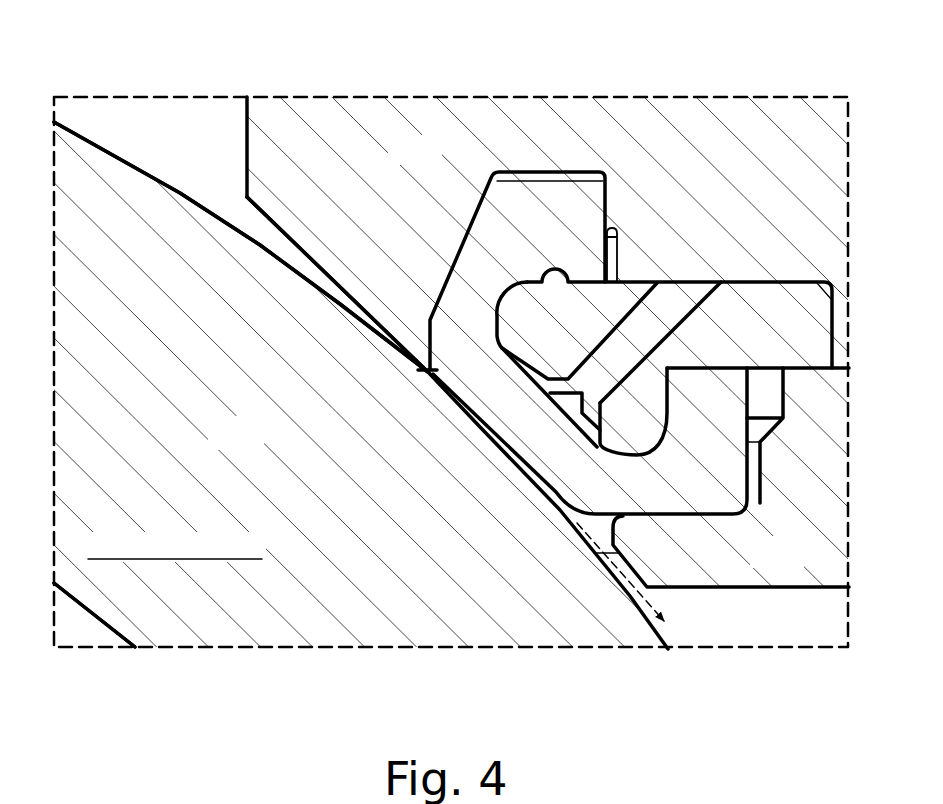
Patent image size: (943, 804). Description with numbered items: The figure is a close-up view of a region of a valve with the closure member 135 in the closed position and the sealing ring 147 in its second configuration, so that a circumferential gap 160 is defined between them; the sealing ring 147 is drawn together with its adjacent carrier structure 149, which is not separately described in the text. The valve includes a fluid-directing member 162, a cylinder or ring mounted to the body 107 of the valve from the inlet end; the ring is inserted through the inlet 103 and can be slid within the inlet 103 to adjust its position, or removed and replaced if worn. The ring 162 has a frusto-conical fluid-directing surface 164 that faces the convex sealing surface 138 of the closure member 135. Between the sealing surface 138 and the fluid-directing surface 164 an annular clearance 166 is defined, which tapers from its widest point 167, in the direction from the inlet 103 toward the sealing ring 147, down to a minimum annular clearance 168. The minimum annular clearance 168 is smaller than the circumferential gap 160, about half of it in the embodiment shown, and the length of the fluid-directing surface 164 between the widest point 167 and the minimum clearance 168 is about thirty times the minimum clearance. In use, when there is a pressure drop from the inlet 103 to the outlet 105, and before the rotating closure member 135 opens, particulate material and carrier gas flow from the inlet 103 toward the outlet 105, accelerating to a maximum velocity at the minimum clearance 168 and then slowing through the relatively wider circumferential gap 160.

The inlet 103 is at (182, 110).
The outlet 105 is at (52, 733).
The body 107 is at (800, 567).
The closure member 135 is at (260, 449).
The sealing surface 138 is at (107, 143).
The sealing ring 147 is at (705, 410).
The seal carrier 149 is at (663, 303).
The circumferential gap 160 is at (528, 473).
The fluid-directing member 162 is at (438, 161).
The fluid-directing surface 164 is at (313, 258).
The annular clearance 166 is at (250, 222).
The widest point 167 is at (247, 195).
The minimum annular clearance 168 is at (423, 377).